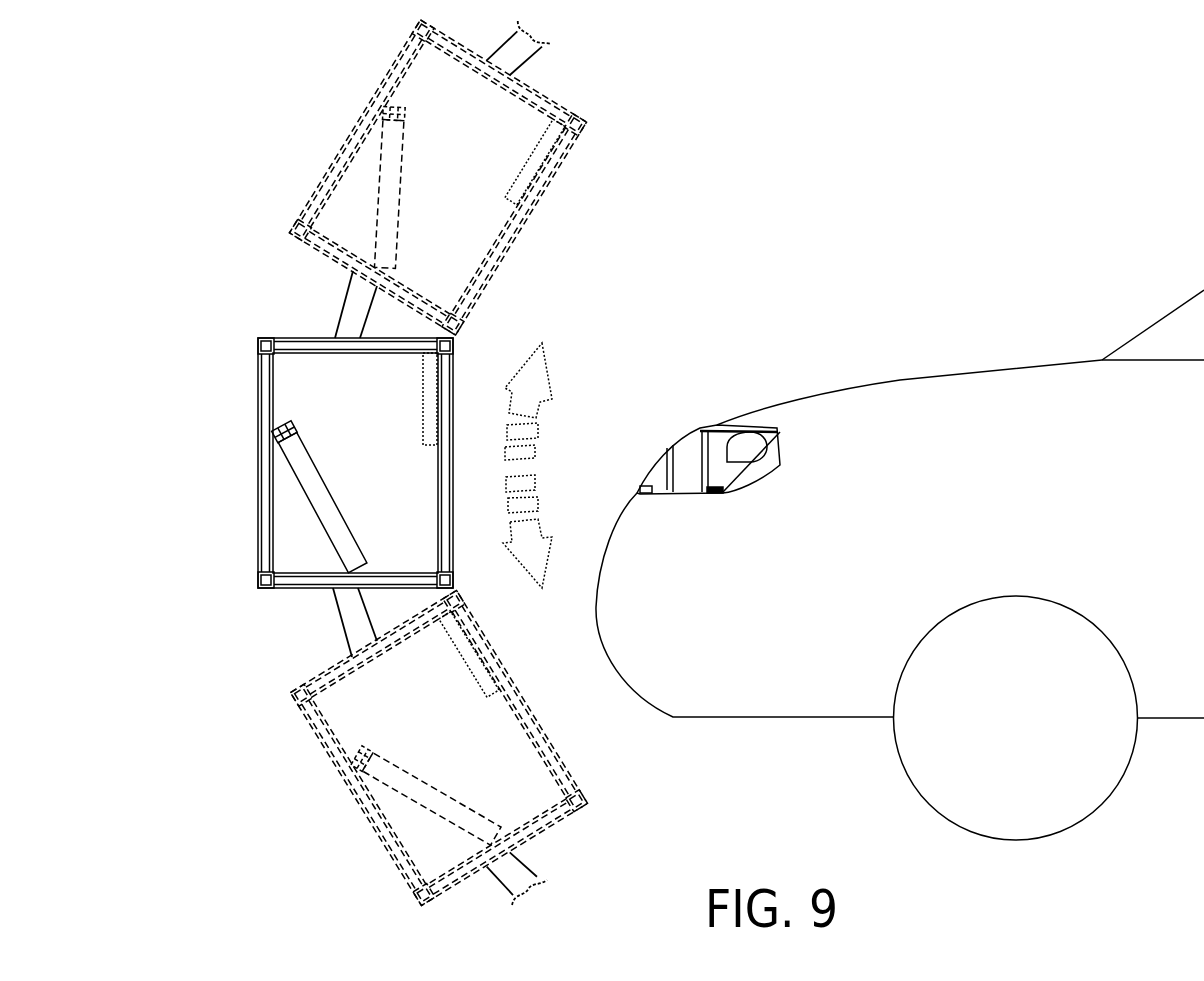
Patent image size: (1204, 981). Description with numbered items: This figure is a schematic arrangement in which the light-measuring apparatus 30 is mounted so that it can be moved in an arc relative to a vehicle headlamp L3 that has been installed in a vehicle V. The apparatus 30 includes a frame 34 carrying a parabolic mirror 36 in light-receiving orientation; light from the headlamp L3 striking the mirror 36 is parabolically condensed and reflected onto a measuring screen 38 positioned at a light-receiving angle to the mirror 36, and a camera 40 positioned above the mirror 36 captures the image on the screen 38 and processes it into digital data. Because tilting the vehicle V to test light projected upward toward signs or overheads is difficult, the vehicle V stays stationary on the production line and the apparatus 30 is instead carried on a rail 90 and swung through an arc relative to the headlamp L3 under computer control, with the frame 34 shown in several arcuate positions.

The apparatus 30 is at (241, 305).
The frame 34 is at (258, 393).
The parabolic mirror 36 is at (334, 524).
The measuring screen 38 is at (425, 420).
The camera 40 is at (276, 433).
The horizontally-oriented rail 90 is at (342, 300).
The vehicle V is at (1027, 395).
The vehicle headlamp L3 is at (717, 435).